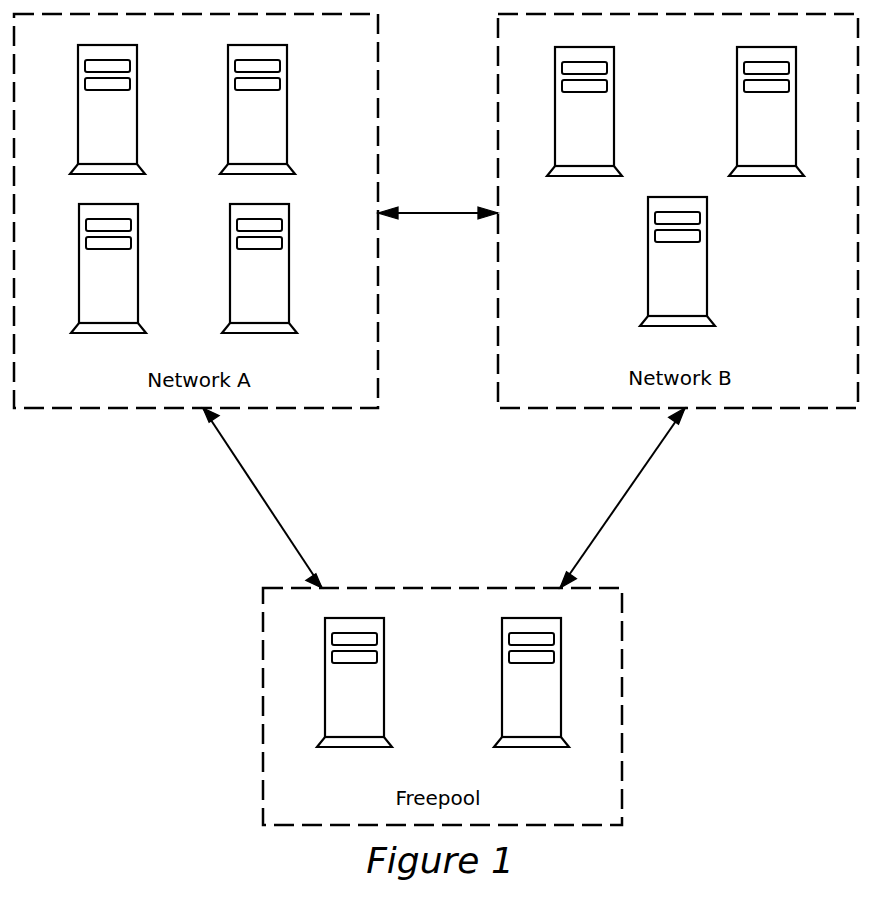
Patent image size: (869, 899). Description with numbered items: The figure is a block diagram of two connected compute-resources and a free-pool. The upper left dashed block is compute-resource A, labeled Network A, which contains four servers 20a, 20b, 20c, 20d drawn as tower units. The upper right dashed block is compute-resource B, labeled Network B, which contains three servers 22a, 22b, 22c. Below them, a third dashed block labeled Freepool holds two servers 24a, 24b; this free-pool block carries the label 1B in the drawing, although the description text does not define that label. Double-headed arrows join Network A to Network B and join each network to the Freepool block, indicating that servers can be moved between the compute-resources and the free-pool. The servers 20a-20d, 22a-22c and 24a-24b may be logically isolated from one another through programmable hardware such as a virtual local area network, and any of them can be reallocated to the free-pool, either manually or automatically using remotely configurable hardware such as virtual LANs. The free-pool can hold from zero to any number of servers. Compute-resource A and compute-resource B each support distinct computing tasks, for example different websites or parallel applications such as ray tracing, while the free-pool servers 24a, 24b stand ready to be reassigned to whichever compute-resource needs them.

The freepool 1B is at (622, 668).
The server 20a is at (107, 109).
The server 20b is at (257, 109).
The server 20c is at (108, 268).
The server 20d is at (259, 268).
The server 22a is at (584, 111).
The server 22b is at (766, 111).
The server 22c is at (677, 261).
The server 24a is at (354, 682).
The server 24b is at (531, 682).